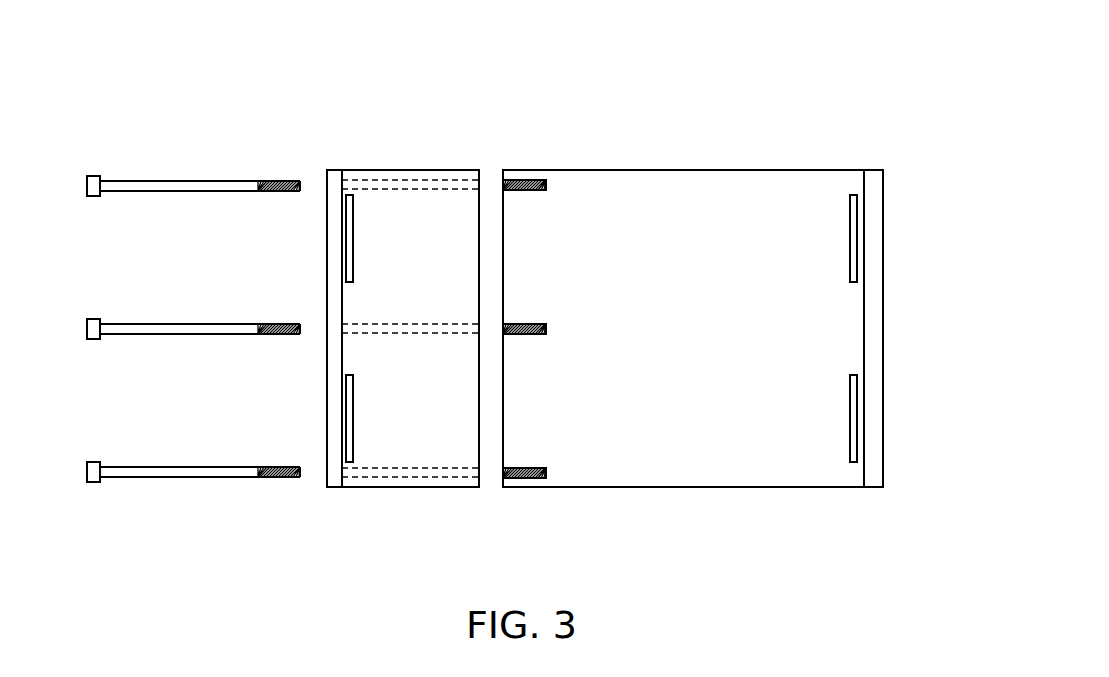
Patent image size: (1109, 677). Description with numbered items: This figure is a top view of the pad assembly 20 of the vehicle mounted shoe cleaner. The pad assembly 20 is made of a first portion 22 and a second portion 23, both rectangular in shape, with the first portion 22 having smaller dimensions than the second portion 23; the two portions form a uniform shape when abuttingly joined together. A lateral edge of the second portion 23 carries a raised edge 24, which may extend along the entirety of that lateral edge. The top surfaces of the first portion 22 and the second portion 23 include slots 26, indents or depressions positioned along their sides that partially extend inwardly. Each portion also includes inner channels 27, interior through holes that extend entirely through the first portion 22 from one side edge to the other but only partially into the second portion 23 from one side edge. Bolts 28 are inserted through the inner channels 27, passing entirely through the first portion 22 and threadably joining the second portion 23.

The pad assembly 20 is at (734, 314).
The first portion 22 is at (389, 210).
The second portion 23 is at (724, 470).
The raised edge 24 is at (884, 308).
The slots 26 is at (356, 272).
The inner channels 27 is at (420, 180).
The bolts 28 is at (198, 181).